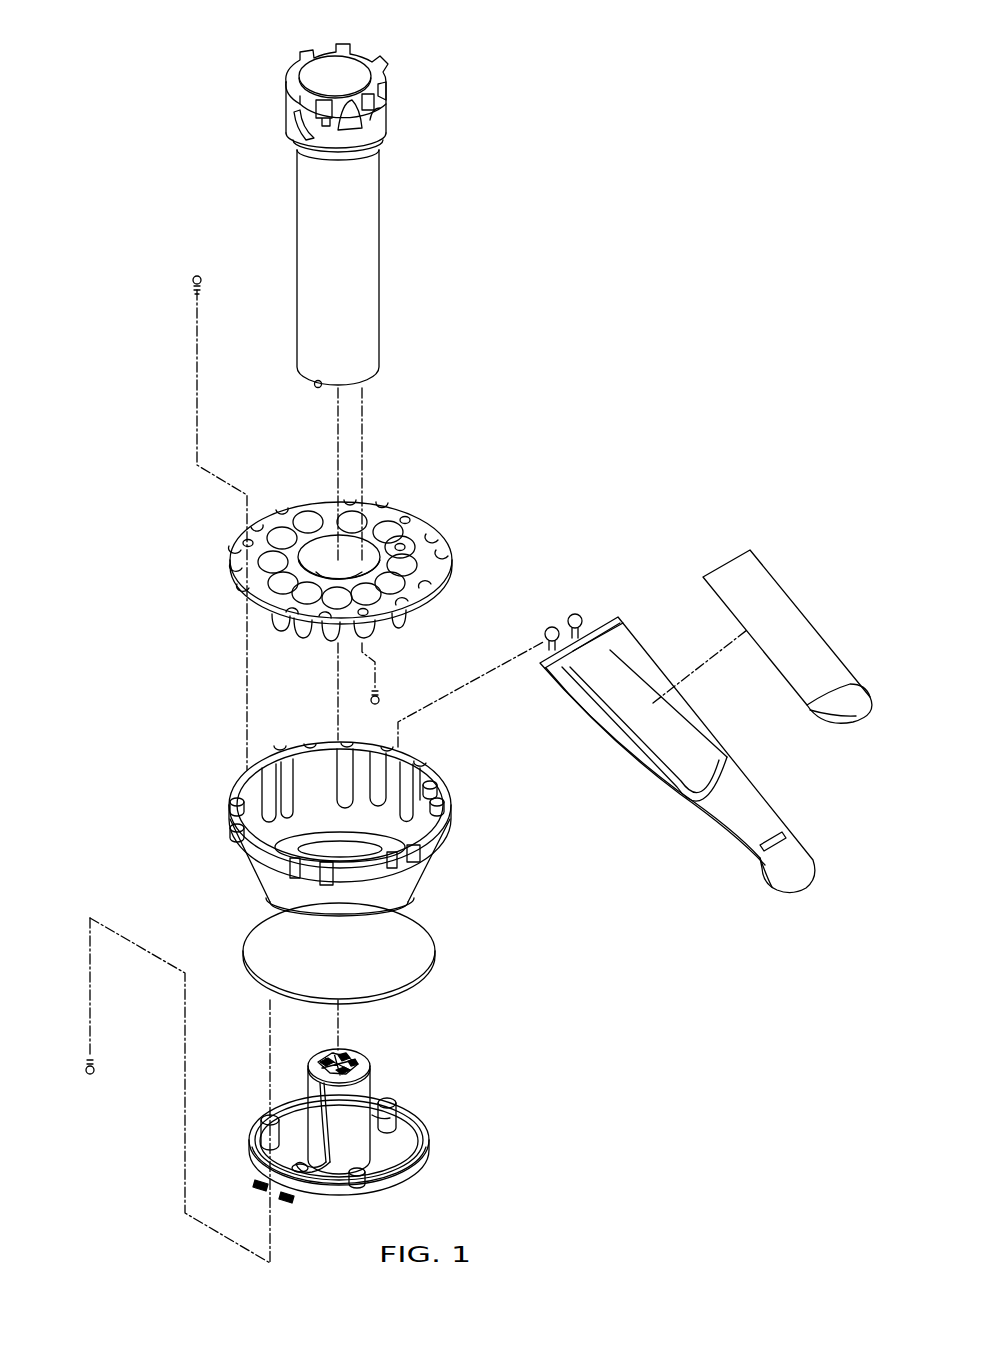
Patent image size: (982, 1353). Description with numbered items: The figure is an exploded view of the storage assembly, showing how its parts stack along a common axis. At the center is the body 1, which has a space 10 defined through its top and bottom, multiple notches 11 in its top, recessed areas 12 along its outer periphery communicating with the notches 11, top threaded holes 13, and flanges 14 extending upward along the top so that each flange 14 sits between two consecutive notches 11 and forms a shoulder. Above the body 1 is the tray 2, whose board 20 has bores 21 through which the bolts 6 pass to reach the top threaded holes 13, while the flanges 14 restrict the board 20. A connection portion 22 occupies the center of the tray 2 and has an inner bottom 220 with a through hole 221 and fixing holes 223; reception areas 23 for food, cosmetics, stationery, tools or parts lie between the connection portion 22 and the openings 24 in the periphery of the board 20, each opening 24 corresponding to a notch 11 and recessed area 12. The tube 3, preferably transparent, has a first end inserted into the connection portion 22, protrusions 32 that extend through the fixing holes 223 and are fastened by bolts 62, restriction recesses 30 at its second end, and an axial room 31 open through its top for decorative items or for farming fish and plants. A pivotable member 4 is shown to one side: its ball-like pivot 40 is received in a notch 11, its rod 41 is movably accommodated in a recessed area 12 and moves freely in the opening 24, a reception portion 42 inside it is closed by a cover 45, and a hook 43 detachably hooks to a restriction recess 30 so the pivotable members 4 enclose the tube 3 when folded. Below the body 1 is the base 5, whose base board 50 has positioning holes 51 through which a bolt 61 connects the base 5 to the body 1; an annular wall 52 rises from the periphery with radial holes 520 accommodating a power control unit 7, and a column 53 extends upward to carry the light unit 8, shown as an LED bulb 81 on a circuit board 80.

The body 1 is at (220, 865).
The space 10 is at (326, 832).
The notches 11 is at (430, 822).
The recessed areas 12 is at (418, 848).
The top threaded holes 13 is at (238, 790).
The flanges 14 is at (307, 742).
The tray 2 is at (213, 590).
The board 20 is at (235, 552).
The bores 21 is at (247, 542).
The connection portion 22 is at (328, 441).
The inner bottom 220 is at (323, 572).
The through hole 221 is at (335, 573).
The fixing holes 223 is at (404, 560).
The reception areas 23 is at (387, 530).
The openings 24 is at (433, 533).
The tube 3 is at (290, 183).
The restriction recesses 30 is at (288, 86).
The room 31 is at (320, 72).
The protrusions 32 is at (312, 385).
The pivotable members 4 is at (578, 750).
The pivot 40 is at (555, 628).
The rod 41 is at (583, 620).
The reception portion 42 is at (615, 675).
The hook 43 is at (780, 835).
The cover 45 is at (762, 580).
The base 5 is at (438, 1128).
The base board 50 is at (400, 1132).
The positioning holes 51 is at (268, 1118).
The annular wall 52 is at (418, 1176).
The column 53 is at (368, 1090).
The radial holes 520 is at (297, 1198).
The bolts 6 is at (193, 278).
The bolt 61 is at (88, 1065).
The bolts 62 is at (381, 698).
The power control unit 7 is at (265, 1184).
The light unit 8 is at (446, 1030).
The circuit board 80 is at (363, 1063).
The LED bulb 81 is at (345, 1060).